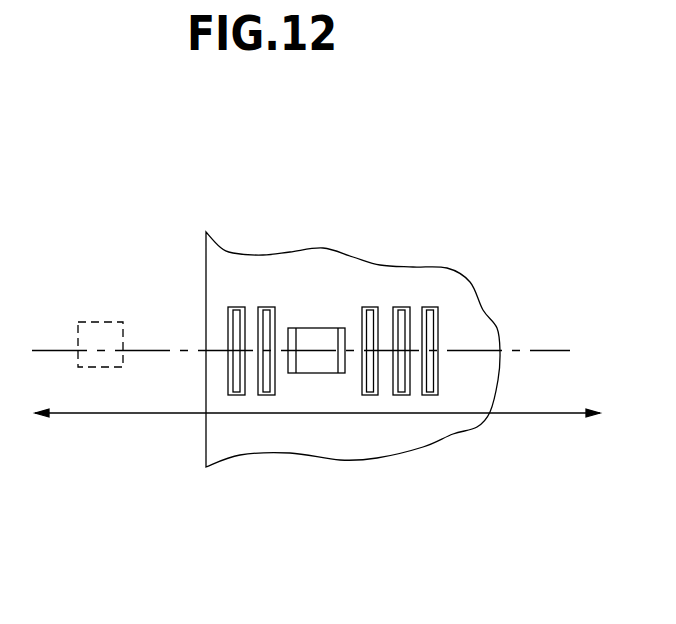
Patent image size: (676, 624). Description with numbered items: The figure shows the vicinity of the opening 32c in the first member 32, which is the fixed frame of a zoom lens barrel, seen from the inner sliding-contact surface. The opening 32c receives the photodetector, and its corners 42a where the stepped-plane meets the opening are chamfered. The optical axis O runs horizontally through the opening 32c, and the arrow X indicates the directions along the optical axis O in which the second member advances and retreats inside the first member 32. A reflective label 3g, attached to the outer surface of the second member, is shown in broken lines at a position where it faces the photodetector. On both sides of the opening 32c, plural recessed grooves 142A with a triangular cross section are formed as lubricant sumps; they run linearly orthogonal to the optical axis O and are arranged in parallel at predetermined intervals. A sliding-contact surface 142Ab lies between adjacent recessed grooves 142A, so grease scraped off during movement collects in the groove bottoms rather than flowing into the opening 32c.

The recessed grooves 142A is at (399, 369).
The sliding-contact surface 142Ab is at (252, 380).
The first member 32 is at (245, 435).
The opening 32c is at (365, 443).
The corners 42a is at (292, 373).
The reflective label 3g is at (92, 322).
The optical axis O is at (47, 350).
The arrow X is at (108, 417).